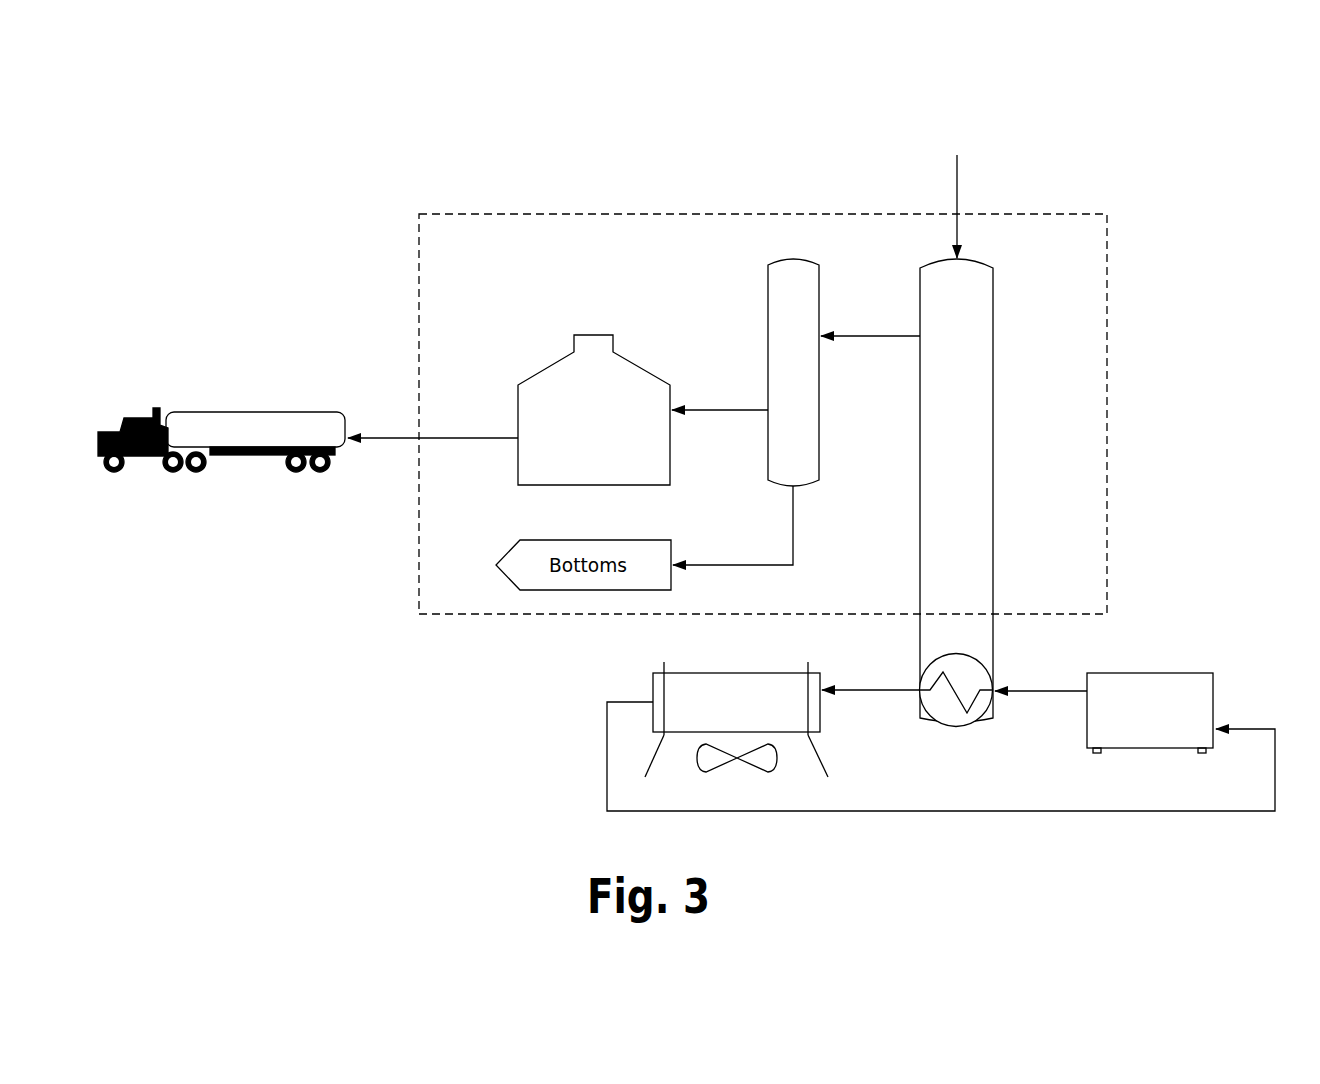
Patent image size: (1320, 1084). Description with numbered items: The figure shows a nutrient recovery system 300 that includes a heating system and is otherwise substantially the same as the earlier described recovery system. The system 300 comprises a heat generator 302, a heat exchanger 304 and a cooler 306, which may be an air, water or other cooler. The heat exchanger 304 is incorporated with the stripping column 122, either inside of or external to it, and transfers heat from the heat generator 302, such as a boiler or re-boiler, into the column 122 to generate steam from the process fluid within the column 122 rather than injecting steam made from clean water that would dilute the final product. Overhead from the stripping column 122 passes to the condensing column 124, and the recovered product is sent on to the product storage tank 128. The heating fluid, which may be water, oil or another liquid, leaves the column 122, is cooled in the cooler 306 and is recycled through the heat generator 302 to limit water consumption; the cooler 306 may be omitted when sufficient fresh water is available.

The nutrient recovery system 300 is at (1222, 91).
The stripping column 122 is at (993, 352).
The condensing column 124 is at (819, 426).
The product storage tank 128 is at (643, 369).
The heat generator 302 is at (1150, 672).
The heat exchanger 304 is at (958, 724).
The cooler 306 is at (820, 720).